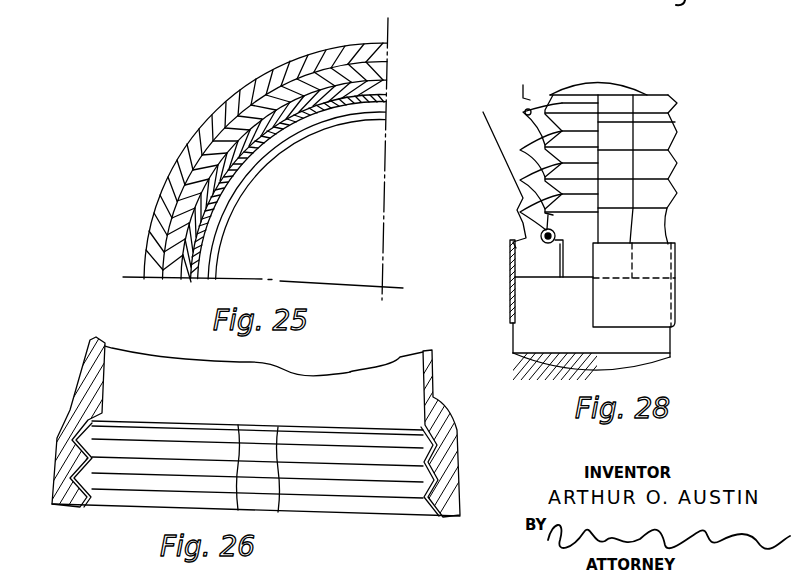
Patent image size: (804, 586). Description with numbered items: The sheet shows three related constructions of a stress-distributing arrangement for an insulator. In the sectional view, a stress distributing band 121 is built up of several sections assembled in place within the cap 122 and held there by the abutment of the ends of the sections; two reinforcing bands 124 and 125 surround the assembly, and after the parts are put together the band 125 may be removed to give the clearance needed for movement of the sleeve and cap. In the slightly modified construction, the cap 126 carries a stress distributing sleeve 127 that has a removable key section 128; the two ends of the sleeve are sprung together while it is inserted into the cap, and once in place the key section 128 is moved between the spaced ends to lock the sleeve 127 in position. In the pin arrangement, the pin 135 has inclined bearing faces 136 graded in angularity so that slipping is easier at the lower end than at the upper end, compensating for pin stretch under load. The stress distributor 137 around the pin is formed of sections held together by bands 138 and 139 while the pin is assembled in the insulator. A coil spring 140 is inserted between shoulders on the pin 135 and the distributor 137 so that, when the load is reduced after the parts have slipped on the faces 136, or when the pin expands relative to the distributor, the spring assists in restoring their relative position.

In FIG. 25, the stress distributing band 121 is at (290, 133).
In FIG. 25, the cap 122 is at (227, 160).
In FIG. 25, the reinforcing band 124 is at (233, 130).
In FIG. 25, the reinforcing band 125 is at (262, 82).
In FIG. 26, the cap 126 is at (92, 365).
In FIG. 26, the stress distributing sleeve 127 is at (342, 503).
In FIG. 26, the removable key section 128 is at (262, 440).
In FIG. 28, the pin 135 is at (538, 322).
In FIG. 28, the inclined bearing faces 136 is at (503, 112).
In FIG. 28, the stress distributor 137 is at (514, 213).
In FIG. 28, the band 138 is at (512, 257).
In FIG. 28, the band 139 is at (677, 112).
In FIG. 28, the coil spring 140 is at (540, 238).